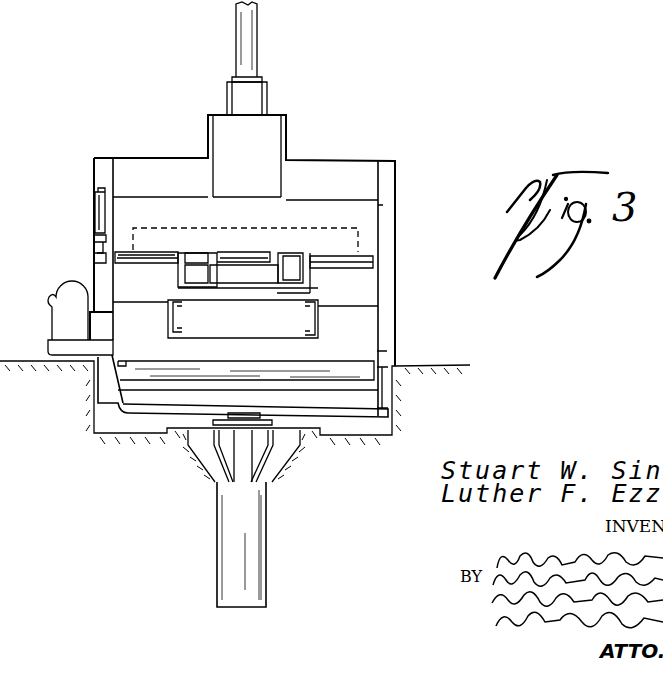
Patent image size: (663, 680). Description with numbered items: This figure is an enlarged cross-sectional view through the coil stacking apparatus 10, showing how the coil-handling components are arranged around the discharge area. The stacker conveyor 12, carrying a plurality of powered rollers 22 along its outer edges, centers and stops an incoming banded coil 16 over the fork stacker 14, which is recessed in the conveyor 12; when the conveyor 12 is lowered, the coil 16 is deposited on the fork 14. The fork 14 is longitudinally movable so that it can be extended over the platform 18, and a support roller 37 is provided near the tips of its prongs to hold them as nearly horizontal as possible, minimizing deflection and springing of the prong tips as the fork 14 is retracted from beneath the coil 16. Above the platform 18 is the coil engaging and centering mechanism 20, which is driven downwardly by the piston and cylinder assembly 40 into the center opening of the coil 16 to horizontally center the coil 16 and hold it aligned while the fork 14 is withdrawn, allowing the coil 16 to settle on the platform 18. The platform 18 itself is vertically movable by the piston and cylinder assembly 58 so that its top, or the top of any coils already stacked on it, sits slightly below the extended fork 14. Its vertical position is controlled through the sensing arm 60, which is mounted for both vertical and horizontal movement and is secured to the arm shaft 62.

The apparatus 10 is at (397, 172).
The stacker conveyor 12 is at (150, 258).
The fork stacker 14 is at (278, 255).
The coil 16 is at (193, 232).
The platform 18 is at (153, 400).
The coil engaging and centering mechanism 20 is at (283, 133).
The powered rollers 22 is at (125, 265).
The support roller 37 is at (242, 277).
The piston and cylinder assembly 40 is at (248, 53).
The piston and cylinder assembly 58 is at (262, 572).
The sensing arm 60 is at (95, 258).
The arm shaft 62 is at (100, 210).